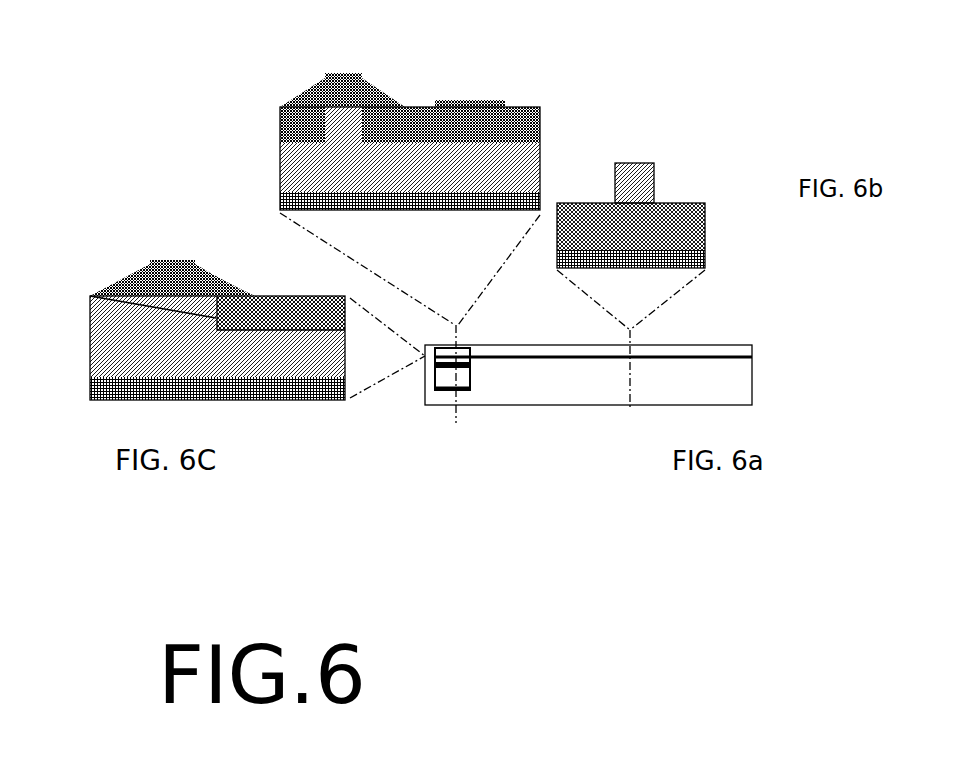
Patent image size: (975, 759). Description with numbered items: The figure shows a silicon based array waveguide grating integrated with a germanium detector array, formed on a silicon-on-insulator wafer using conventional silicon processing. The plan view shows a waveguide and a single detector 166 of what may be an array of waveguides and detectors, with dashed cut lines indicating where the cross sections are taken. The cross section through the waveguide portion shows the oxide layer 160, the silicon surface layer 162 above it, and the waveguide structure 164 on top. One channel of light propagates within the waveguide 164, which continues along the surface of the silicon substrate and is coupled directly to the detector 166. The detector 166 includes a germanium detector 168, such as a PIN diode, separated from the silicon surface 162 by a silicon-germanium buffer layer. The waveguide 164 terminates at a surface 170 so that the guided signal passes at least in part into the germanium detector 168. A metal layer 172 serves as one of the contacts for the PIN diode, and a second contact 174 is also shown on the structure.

In FIG. 6, the oxide layer 160 is at (282, 200).
In FIG. 6c, the oxide layer 160 is at (92, 392).
In FIG. 6b, the oxide layer 160 is at (706, 258).
In FIG. 6, the silicon surface layer 162 is at (540, 158).
In FIG. 6c, the silicon surface layer 162 is at (318, 365).
In FIG. 6b, the silicon surface layer 162 is at (688, 233).
In FIG. 6, the waveguide structure 164 is at (338, 122).
In FIG. 6c, the waveguide structure 164 is at (325, 285).
In FIG. 6b, the waveguide structure 164 is at (642, 183).
In FIG. 6c, the detector 166 is at (90, 261).
In FIG. 6a, the detector 166 is at (470, 350).
In FIG. 6, the germanium detector 168 is at (384, 92).
In FIG. 6c, the germanium detector 168 is at (237, 284).
In FIG. 6c, the surface 170 is at (90, 296).
In FIG. 6, the metal layer 172 is at (341, 72).
In FIG. 6c, the metal layer 172 is at (172, 260).
In FIG. 6, the second contact 174 is at (470, 100).